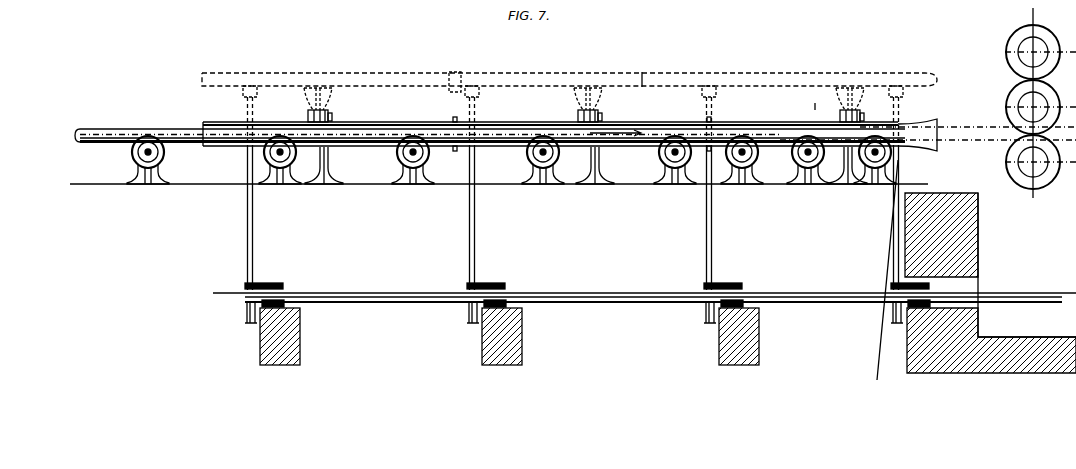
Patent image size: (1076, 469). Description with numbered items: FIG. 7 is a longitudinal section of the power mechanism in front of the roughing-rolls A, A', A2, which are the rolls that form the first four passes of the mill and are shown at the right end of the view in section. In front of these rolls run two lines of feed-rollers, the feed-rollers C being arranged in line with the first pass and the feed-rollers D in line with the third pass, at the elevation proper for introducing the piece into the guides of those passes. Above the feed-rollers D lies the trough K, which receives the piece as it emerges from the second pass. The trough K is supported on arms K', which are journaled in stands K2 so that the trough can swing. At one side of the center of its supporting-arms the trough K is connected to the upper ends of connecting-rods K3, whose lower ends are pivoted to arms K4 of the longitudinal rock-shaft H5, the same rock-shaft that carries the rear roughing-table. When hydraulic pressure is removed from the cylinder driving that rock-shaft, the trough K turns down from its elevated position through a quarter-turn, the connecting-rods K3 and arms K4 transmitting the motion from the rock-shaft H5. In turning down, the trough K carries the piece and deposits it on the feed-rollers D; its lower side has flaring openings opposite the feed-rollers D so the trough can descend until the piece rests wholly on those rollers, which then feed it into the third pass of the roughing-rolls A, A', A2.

The feed-rollers C is at (575, 133).
The feed-rollers D is at (511, 160).
The trough K is at (569, 110).
The arms K' is at (579, 105).
The stands K2 is at (586, 165).
The connecting-rods K3 is at (893, 231).
The arms K4 is at (890, 318).
The longitudinal rock-shaft H5 is at (644, 287).
The roughing-roll A is at (1028, 103).
The roughing-roll A' is at (1027, 107).
The roughing-roll A2 is at (1002, 154).